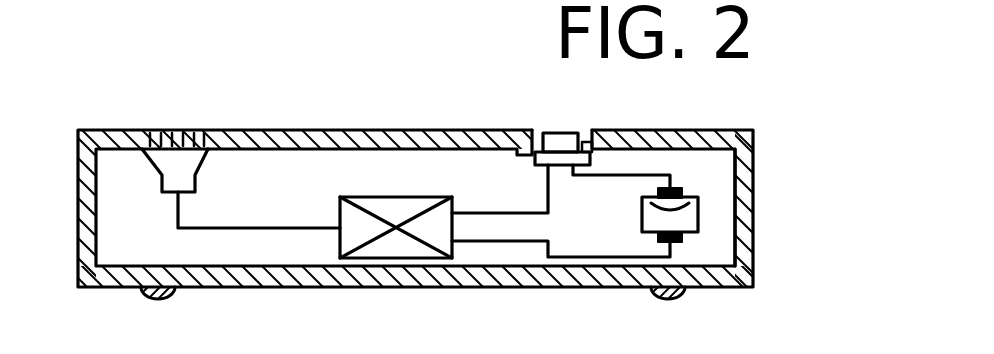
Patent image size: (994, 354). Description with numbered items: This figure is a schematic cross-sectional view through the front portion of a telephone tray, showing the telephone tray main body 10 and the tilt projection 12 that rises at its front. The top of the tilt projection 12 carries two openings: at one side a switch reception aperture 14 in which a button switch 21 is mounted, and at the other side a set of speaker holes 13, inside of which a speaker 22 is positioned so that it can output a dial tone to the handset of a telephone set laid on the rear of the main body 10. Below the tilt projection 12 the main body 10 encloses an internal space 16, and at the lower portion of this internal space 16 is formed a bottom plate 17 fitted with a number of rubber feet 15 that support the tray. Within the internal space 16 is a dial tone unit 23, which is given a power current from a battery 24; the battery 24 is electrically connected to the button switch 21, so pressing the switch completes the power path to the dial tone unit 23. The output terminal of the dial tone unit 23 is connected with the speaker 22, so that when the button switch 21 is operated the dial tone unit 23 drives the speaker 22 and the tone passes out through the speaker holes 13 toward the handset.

The telephone tray main body 10 is at (753, 190).
The tilt projection 12 is at (345, 130).
The speaker holes 13 is at (160, 134).
The switch reception aperture 14 is at (541, 133).
The rubber feet 15 is at (148, 300).
The internal space 16 is at (692, 158).
The bottom plate 17 is at (270, 277).
The button switch 21 is at (574, 133).
The speaker 22 is at (196, 158).
The dial tone unit 23 is at (385, 247).
The battery 24 is at (650, 218).